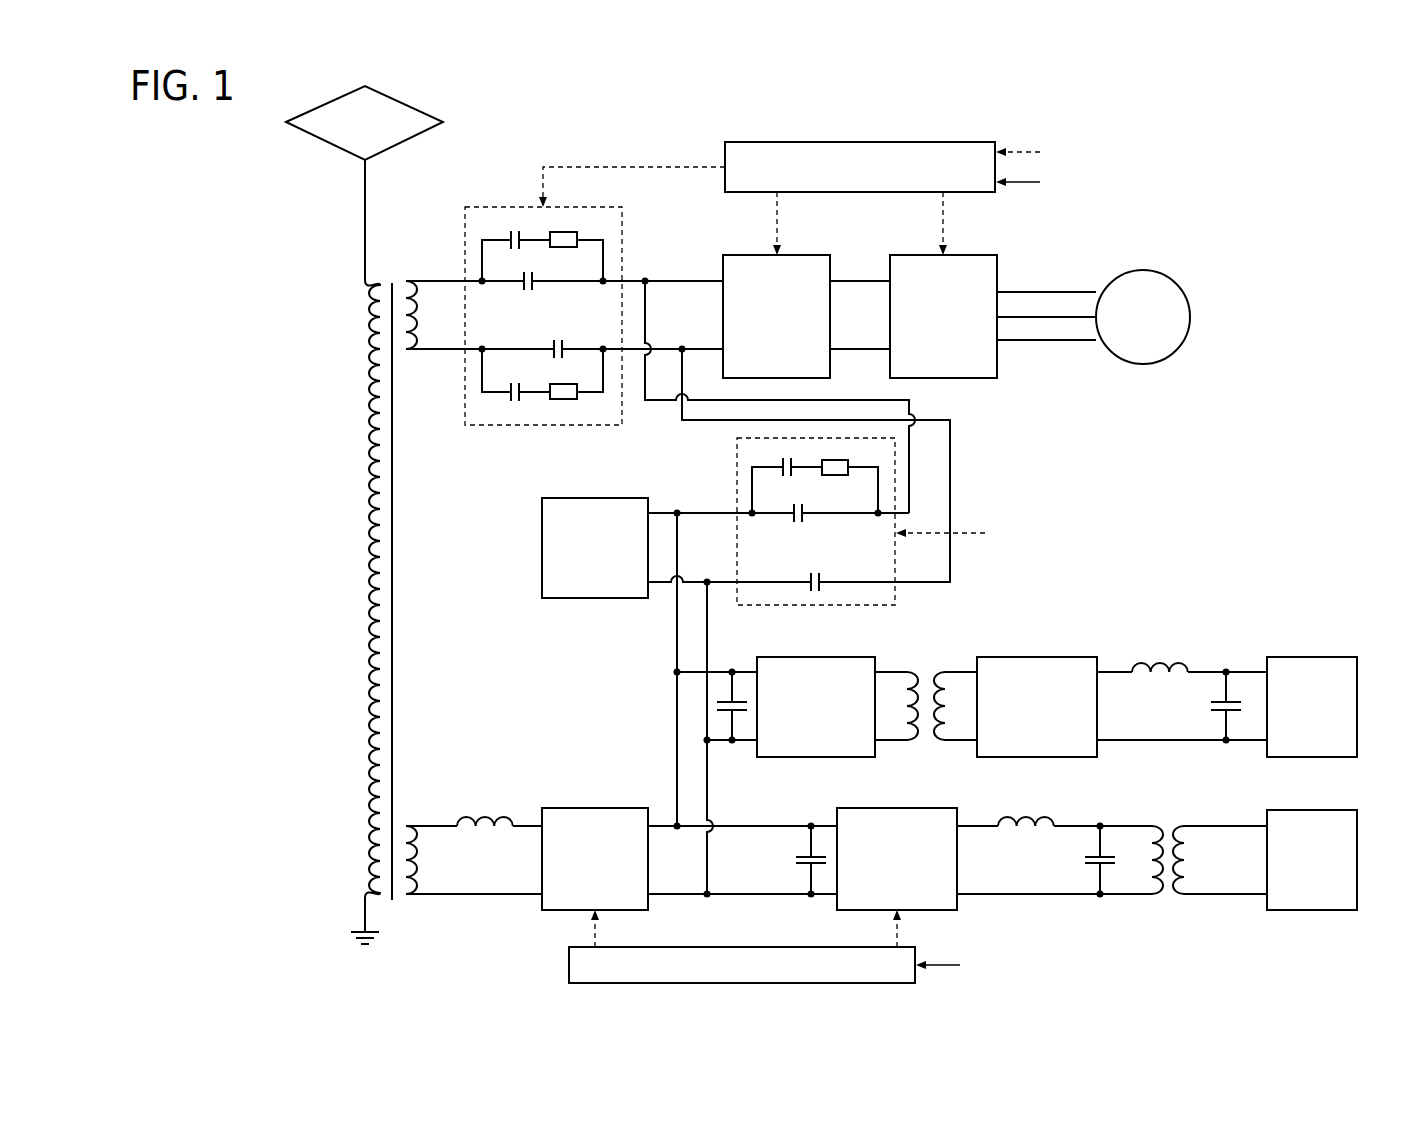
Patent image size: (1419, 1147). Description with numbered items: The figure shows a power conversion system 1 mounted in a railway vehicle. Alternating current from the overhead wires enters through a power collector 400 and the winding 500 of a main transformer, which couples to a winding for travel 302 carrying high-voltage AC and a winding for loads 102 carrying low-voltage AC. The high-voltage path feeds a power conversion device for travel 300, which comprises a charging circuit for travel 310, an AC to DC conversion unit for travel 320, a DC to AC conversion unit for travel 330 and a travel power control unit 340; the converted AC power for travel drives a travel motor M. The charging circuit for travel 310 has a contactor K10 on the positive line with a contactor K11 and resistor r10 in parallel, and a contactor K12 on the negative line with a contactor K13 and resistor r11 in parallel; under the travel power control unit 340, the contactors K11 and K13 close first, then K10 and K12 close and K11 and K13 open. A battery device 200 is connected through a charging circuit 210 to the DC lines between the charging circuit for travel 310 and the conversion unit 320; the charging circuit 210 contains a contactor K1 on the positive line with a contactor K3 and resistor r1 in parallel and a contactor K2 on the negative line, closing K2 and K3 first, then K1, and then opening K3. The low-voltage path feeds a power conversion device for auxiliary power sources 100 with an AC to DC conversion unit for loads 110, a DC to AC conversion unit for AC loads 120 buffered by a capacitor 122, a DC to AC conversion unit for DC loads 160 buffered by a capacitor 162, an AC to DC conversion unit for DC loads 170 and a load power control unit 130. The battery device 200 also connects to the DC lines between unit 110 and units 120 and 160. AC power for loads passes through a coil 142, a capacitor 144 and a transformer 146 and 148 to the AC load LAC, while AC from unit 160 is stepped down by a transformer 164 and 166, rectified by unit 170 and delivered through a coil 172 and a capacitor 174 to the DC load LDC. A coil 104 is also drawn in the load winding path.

The power conversion system 1 is at (1354, 195).
The power conversion device for auxiliary power sources 100 is at (890, 758).
The winding for loads 102 is at (425, 823).
The reactor 104 is at (485, 815).
The AC to DC conversion unit for loads 110 is at (595, 808).
The DC to AC conversion unit for AC loads 120 is at (888, 808).
The capacitor 122 is at (771, 860).
The load power control unit 130 is at (569, 964).
The coil 142 is at (1027, 812).
The capacitor 144 is at (1056, 860).
The transformer 146 is at (1155, 825).
The transformer 148 is at (1182, 824).
The DC to AC conversion unit for DC loads 160 is at (813, 657).
The capacitor 162 is at (681, 706).
The transformer 164 is at (910, 672).
The transformer 166 is at (940, 672).
The AC to DC conversion unit for DC loads 170 is at (1040, 657).
The coil 172 is at (1158, 660).
The capacitor 174 is at (1180, 706).
The battery device 200 is at (595, 497).
The charging circuit 210 is at (777, 521).
The power conversion device for travel 300 is at (837, 327).
The winding for travel 302 is at (427, 272).
The charging circuit for travel 310 is at (577, 313).
The AC to DC conversion unit for travel 320 is at (793, 255).
The DC to AC conversion unit for travel 330 is at (957, 255).
The travel power control unit 340 is at (862, 140).
The power collector 400 is at (435, 110).
The winding of main transformer 500 is at (366, 382).
The travel motor M is at (1145, 270).
The contactor K1 is at (810, 524).
The contactor K2 is at (801, 573).
The contactor K3 is at (787, 485).
The resistor r1 is at (850, 486).
The contactor K10 is at (509, 292).
The contactor K11 is at (512, 248).
The contactor K12 is at (559, 334).
The contactor K13 is at (516, 375).
The resistor r10 is at (575, 256).
The resistor r11 is at (576, 374).
The DC load LDC is at (1312, 657).
The AC load LAC is at (1313, 808).